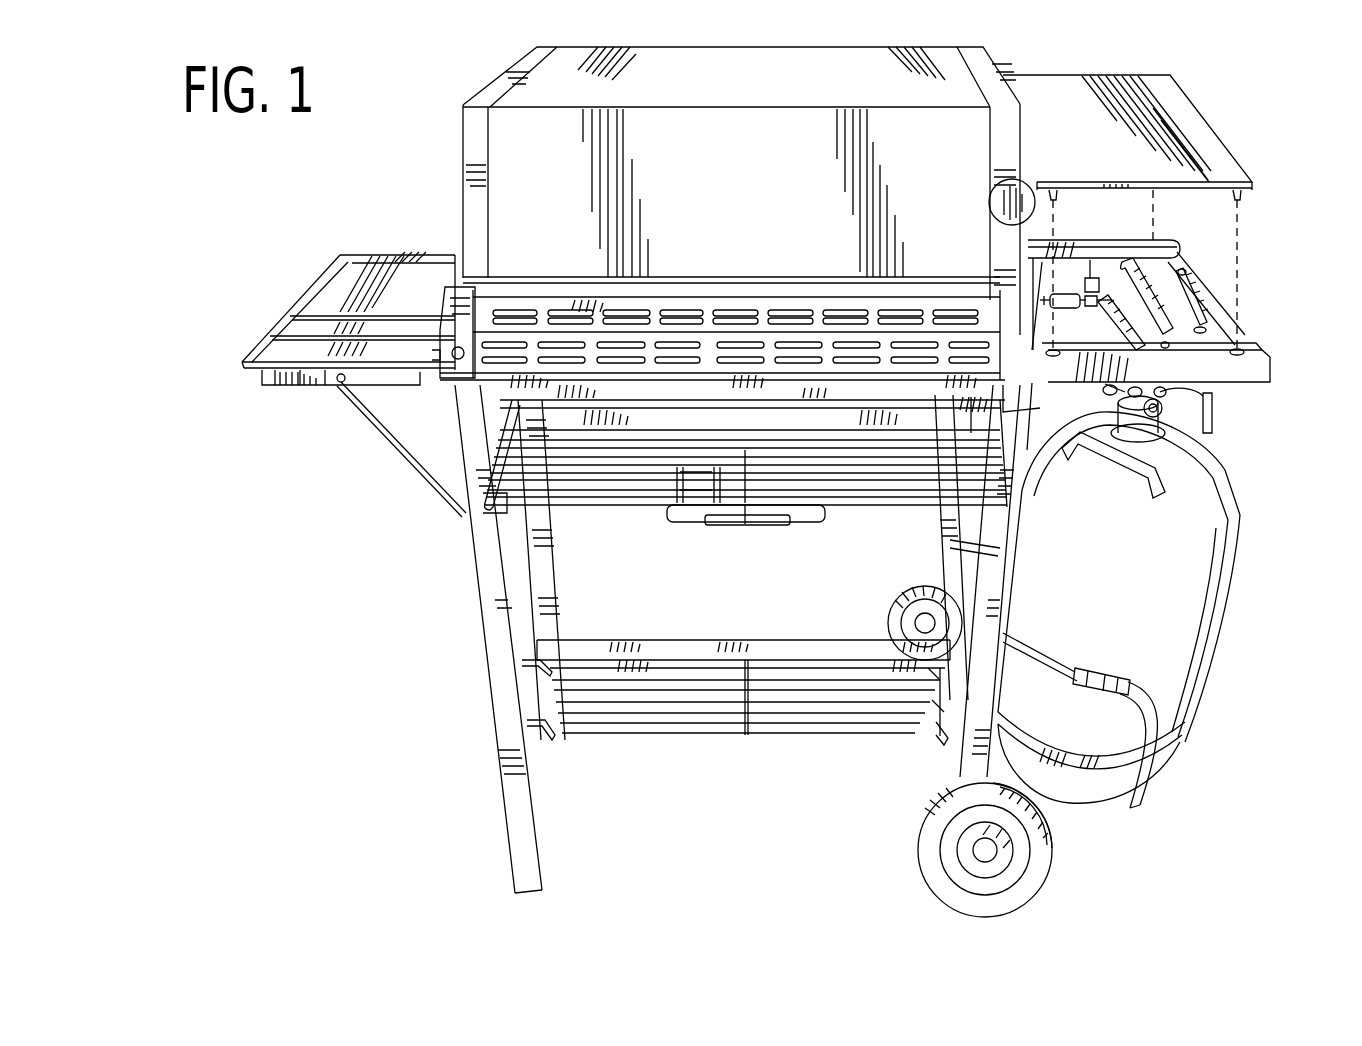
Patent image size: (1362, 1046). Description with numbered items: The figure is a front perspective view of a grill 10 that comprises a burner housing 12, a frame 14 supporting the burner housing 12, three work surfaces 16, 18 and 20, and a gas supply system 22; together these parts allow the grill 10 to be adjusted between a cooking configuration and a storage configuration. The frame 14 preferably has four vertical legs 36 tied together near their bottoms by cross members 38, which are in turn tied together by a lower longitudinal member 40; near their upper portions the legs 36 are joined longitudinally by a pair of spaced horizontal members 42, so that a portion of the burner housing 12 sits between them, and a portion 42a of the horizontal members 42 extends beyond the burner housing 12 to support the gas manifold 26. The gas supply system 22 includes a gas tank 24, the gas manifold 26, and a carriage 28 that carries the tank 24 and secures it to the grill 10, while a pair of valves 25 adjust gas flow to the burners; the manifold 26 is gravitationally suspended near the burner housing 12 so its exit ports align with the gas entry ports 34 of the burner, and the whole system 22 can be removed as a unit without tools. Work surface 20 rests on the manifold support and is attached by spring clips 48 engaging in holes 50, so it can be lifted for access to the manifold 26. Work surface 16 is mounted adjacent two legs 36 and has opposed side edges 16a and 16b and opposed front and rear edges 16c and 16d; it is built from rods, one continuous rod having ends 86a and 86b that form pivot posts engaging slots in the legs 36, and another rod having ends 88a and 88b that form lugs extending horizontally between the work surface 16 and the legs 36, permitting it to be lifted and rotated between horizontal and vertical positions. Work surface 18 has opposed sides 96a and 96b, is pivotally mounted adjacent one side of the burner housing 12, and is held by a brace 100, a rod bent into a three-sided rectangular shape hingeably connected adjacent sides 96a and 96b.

The grill 10 is at (362, 657).
The burner housing 12 is at (912, 72).
The frame 14 is at (480, 762).
The work surface 16 is at (445, 545).
The side edge 16a is at (497, 442).
The side edge 16b is at (1107, 416).
The front edge 16c is at (668, 503).
The rear edge 16d is at (662, 440).
The work surface 18 is at (330, 292).
The work surface 20 is at (1197, 140).
The gas supply system 22 is at (1275, 812).
The gas tank 24 is at (1078, 615).
The valves 25 is at (1096, 280).
The gas manifold 26 is at (1118, 322).
The carriage 28 is at (985, 545).
The gas entry ports 34 is at (1065, 295).
The vertical legs 36 is at (535, 550).
The cross members 38 is at (540, 610).
The lower longitudinal member 40 is at (678, 640).
The horizontal members 42 is at (473, 383).
The portion of horizontal members 42a is at (1222, 378).
The spring clips 48 is at (1057, 193).
The holes 50 is at (1242, 351).
The pivot post end 86a is at (990, 283).
The pivot post end 86b is at (487, 507).
The lug end 88a is at (1000, 458).
The lug end 88b is at (530, 507).
The side of work surface 96a is at (405, 262).
The side of work surface 96b is at (300, 388).
The brace 100 is at (400, 423).